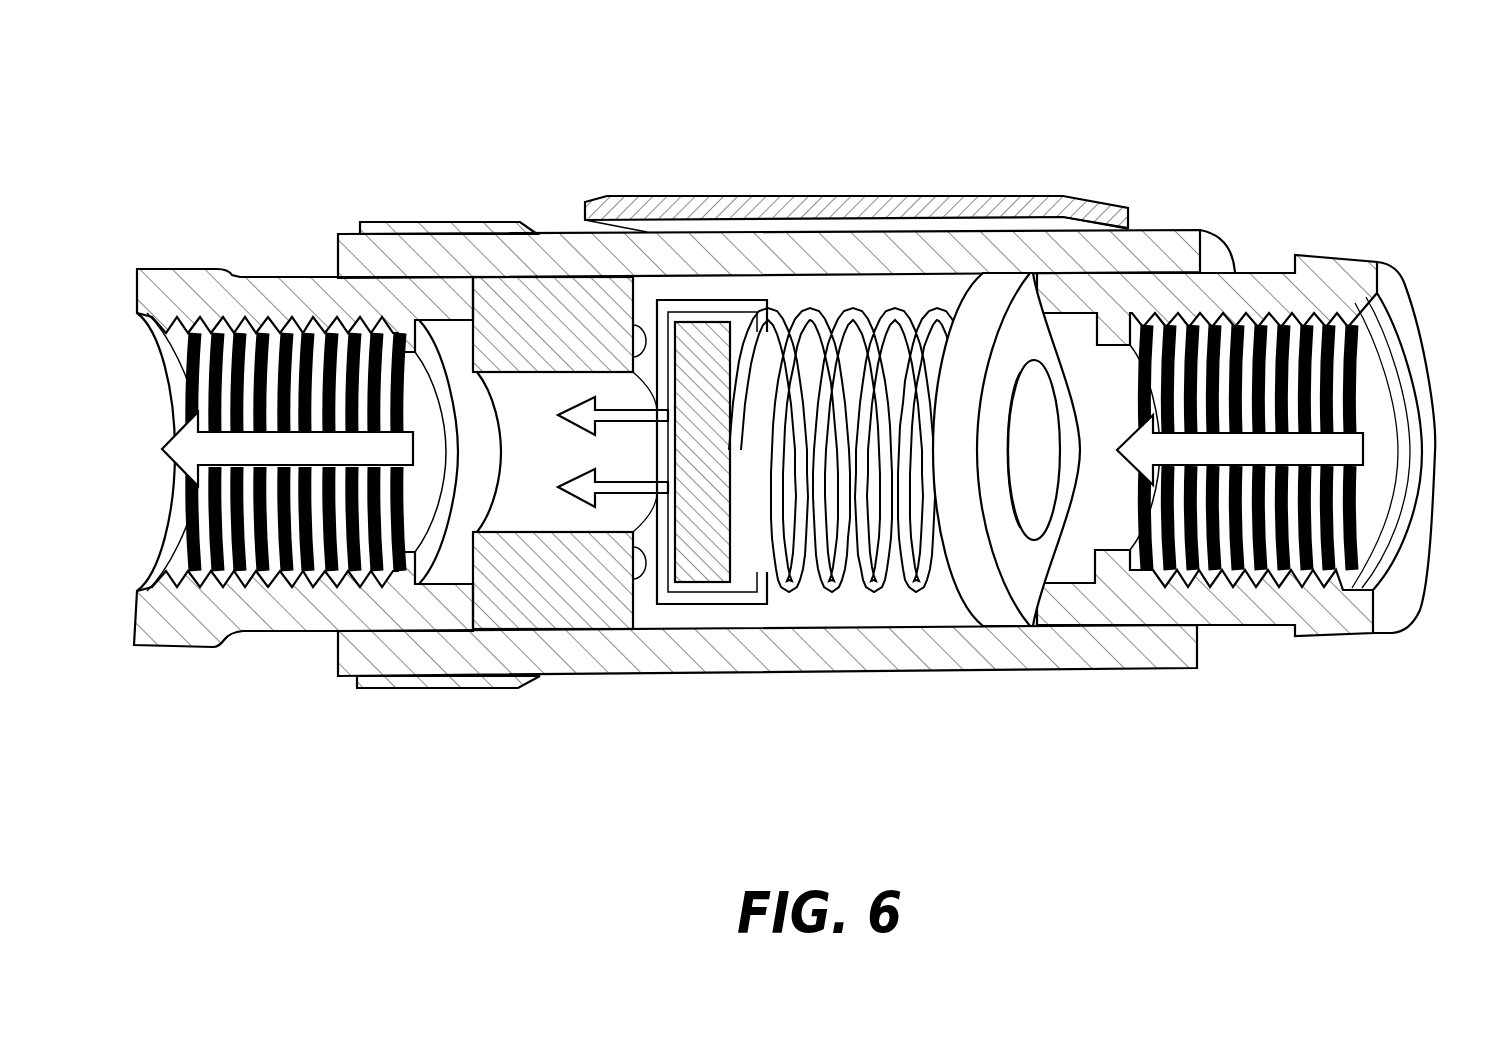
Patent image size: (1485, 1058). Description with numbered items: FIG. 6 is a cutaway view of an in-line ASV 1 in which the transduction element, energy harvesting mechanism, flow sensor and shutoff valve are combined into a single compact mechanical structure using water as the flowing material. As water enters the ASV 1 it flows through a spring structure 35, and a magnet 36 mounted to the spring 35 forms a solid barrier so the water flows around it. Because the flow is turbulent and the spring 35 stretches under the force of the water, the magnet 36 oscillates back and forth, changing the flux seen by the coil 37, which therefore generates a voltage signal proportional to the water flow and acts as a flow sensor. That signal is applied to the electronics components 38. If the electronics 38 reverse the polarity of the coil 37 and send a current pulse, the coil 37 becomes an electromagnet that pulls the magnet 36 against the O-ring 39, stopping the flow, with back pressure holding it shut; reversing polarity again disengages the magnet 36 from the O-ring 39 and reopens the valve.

The ASV 1 is at (784, 372).
The spring structure 35 is at (890, 570).
The magnet 36 is at (700, 557).
The coil 37 is at (418, 222).
The electronics components 38 is at (840, 207).
The O-ring 39 is at (561, 320).